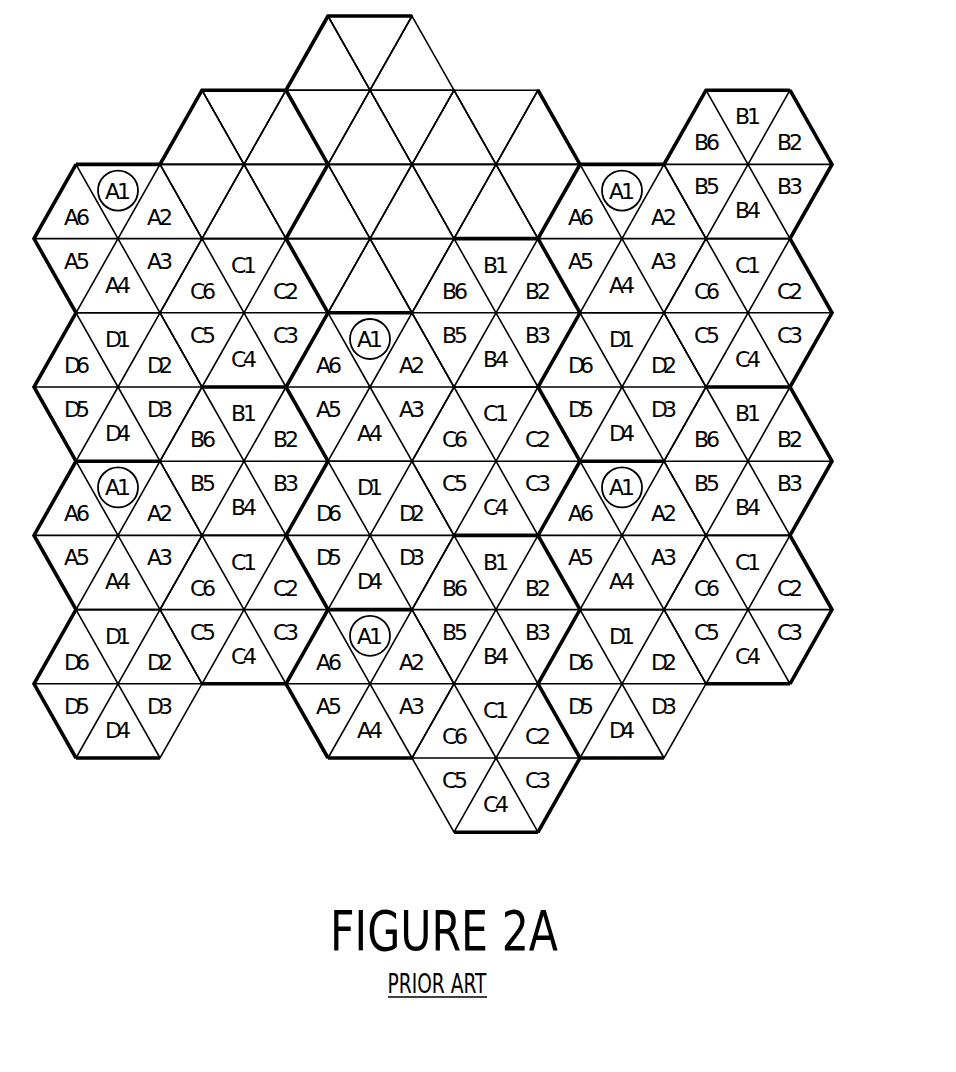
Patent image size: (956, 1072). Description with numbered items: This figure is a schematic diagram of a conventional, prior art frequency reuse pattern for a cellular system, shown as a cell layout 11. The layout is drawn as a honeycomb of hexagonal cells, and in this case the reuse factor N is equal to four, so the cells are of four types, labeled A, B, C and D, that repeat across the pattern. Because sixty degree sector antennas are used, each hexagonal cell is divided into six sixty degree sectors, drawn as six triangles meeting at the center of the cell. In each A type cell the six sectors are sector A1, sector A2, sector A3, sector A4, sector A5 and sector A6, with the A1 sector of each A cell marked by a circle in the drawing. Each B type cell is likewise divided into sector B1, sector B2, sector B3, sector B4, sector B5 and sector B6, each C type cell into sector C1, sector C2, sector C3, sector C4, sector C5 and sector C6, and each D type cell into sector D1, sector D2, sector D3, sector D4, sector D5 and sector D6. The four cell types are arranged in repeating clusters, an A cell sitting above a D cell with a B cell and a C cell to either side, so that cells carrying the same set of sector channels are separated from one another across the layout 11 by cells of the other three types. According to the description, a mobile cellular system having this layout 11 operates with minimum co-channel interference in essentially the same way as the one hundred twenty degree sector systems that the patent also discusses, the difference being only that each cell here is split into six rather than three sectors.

The cell layout 11 is at (458, 424).
The sector A1 is at (370, 53).
The sector A2 is at (412, 53).
The sector A3 is at (412, 127).
The sector A4 is at (370, 127).
The sector A5 is at (328, 127).
The sector A6 is at (328, 53).
The sector B1 is at (244, 127).
The sector B2 is at (286, 127).
The sector B3 is at (286, 201).
The sector B4 is at (244, 201).
The sector B5 is at (202, 201).
The sector B6 is at (202, 127).
The sector C1 is at (496, 127).
The sector C2 is at (538, 127).
The sector C3 is at (538, 201).
The sector C4 is at (496, 201).
The sector C5 is at (454, 201).
The sector C6 is at (454, 127).
The sector D1 is at (370, 201).
The sector D2 is at (412, 201).
The sector D3 is at (412, 276).
The sector D4 is at (370, 276).
The sector D5 is at (328, 276).
The sector D6 is at (328, 201).